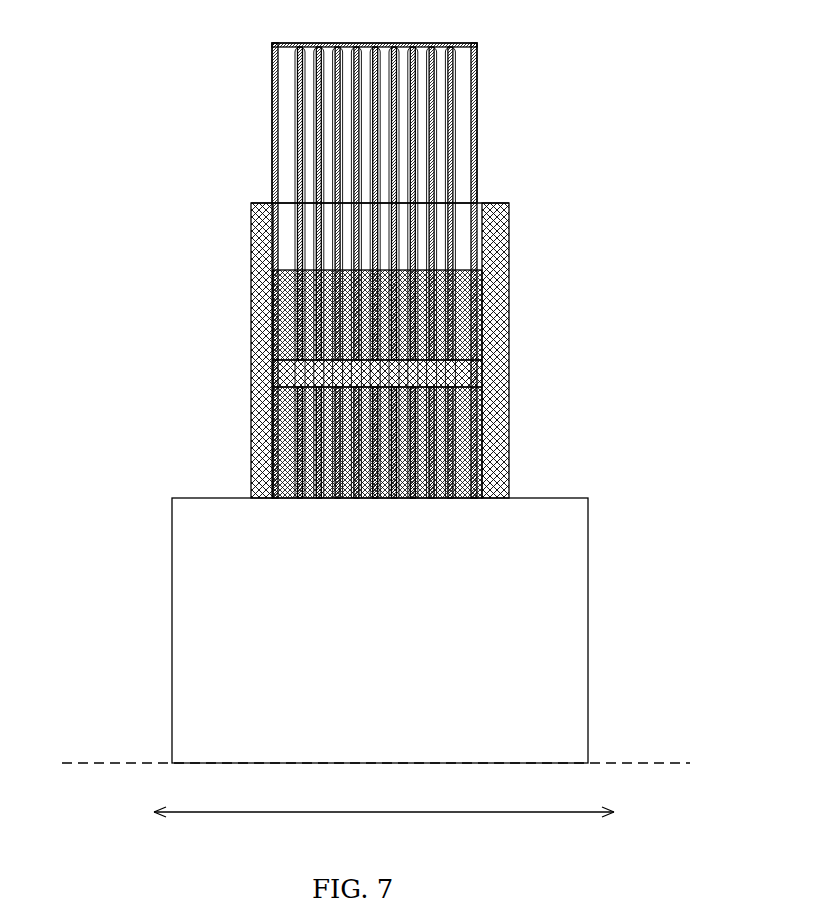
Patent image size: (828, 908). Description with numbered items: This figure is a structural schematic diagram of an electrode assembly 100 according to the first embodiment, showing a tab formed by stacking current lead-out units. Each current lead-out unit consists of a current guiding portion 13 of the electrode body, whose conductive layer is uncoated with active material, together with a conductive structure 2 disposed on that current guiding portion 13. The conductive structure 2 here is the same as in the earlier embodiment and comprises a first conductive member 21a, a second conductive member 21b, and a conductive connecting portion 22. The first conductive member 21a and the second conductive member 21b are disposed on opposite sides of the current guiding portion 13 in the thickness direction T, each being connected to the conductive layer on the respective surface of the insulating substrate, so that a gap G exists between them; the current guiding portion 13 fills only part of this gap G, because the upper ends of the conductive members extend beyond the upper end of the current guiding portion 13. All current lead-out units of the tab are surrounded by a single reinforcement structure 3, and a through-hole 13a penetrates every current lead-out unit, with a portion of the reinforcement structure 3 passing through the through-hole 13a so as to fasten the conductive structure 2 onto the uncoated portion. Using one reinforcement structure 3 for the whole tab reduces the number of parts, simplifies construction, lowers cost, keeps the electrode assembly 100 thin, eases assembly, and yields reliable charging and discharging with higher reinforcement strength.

The electrode assembly 100 is at (163, 450).
The conductive structure 2 is at (345, 253).
The first conductive member 21a is at (275, 120).
The second conductive member 21b is at (287, 60).
The conductive connecting portion 22 is at (283, 44).
The gap G is at (280, 78).
The reinforcement structure 3 is at (253, 378).
The current guiding portion 13 is at (250, 313).
The through-hole 13a is at (470, 362).
The thickness direction T is at (384, 797).